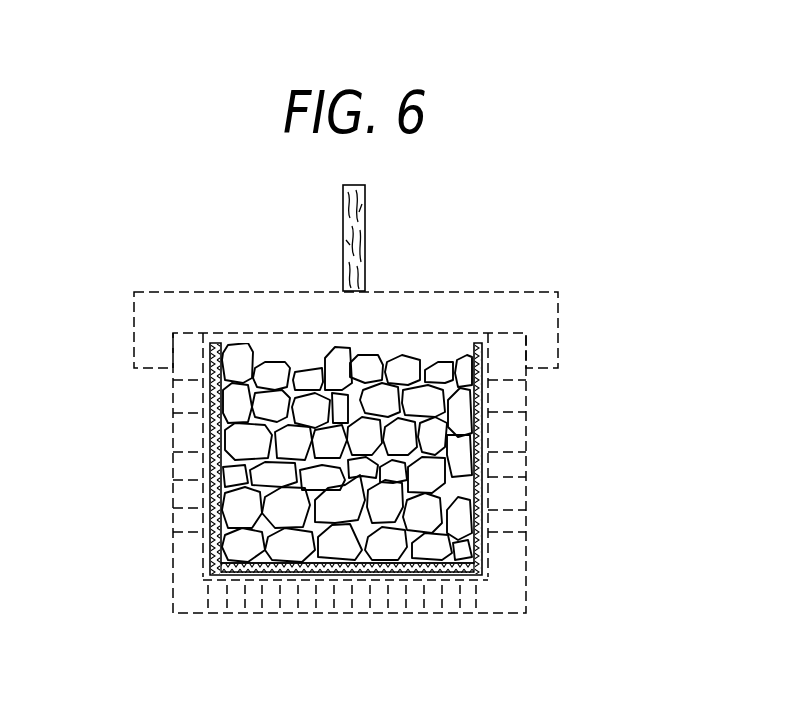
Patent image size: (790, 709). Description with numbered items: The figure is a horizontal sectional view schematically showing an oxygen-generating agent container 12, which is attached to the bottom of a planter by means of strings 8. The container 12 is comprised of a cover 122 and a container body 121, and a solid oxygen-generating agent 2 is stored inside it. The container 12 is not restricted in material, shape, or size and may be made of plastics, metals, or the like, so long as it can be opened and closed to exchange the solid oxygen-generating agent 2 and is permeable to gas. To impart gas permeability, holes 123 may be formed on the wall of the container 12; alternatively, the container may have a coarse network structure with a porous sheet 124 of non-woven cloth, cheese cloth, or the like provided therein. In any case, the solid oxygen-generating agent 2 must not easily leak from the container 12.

The solid oxygen-generating agent 2 is at (247, 502).
The strings 8 is at (366, 233).
The oxygen-generating agent container 12 is at (597, 299).
The container body 121 is at (526, 489).
The cover 122 is at (558, 336).
The holes 123 is at (423, 613).
The porous sheet 124 is at (240, 577).